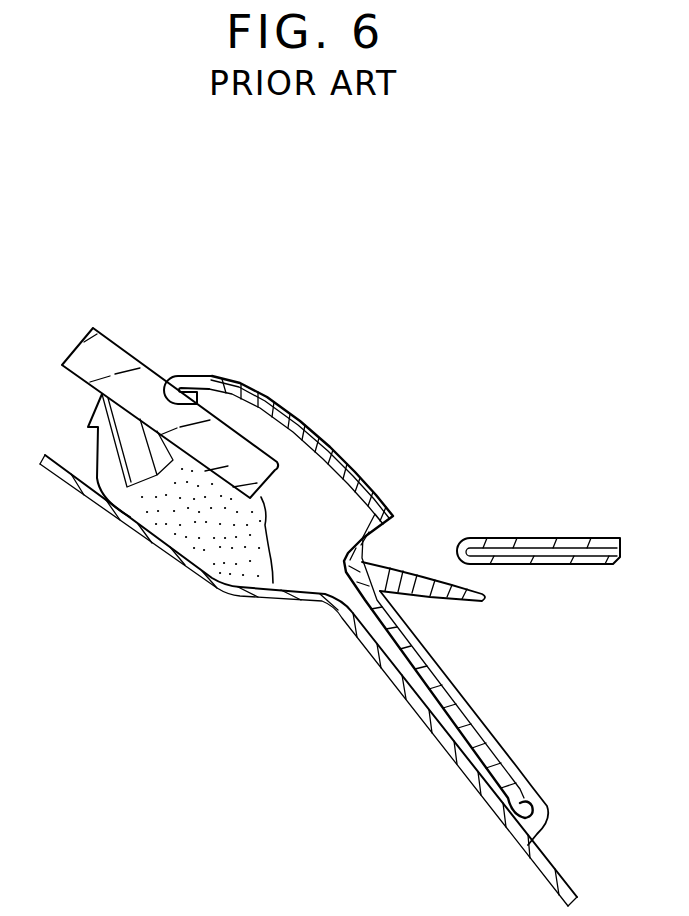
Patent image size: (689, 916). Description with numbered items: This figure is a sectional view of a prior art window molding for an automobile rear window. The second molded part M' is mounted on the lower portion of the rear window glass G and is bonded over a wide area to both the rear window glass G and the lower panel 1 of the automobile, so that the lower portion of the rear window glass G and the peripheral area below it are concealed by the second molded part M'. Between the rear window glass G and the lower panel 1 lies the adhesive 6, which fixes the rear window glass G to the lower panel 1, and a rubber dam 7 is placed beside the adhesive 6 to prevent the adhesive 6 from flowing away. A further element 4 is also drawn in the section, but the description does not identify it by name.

The rear window glass G is at (120, 360).
The rubber dam 7 is at (97, 408).
The adhesive 6 is at (261, 532).
The lower panel 1 is at (414, 707).
The second molded part M' is at (356, 610).
The retainer plate 4 is at (512, 536).